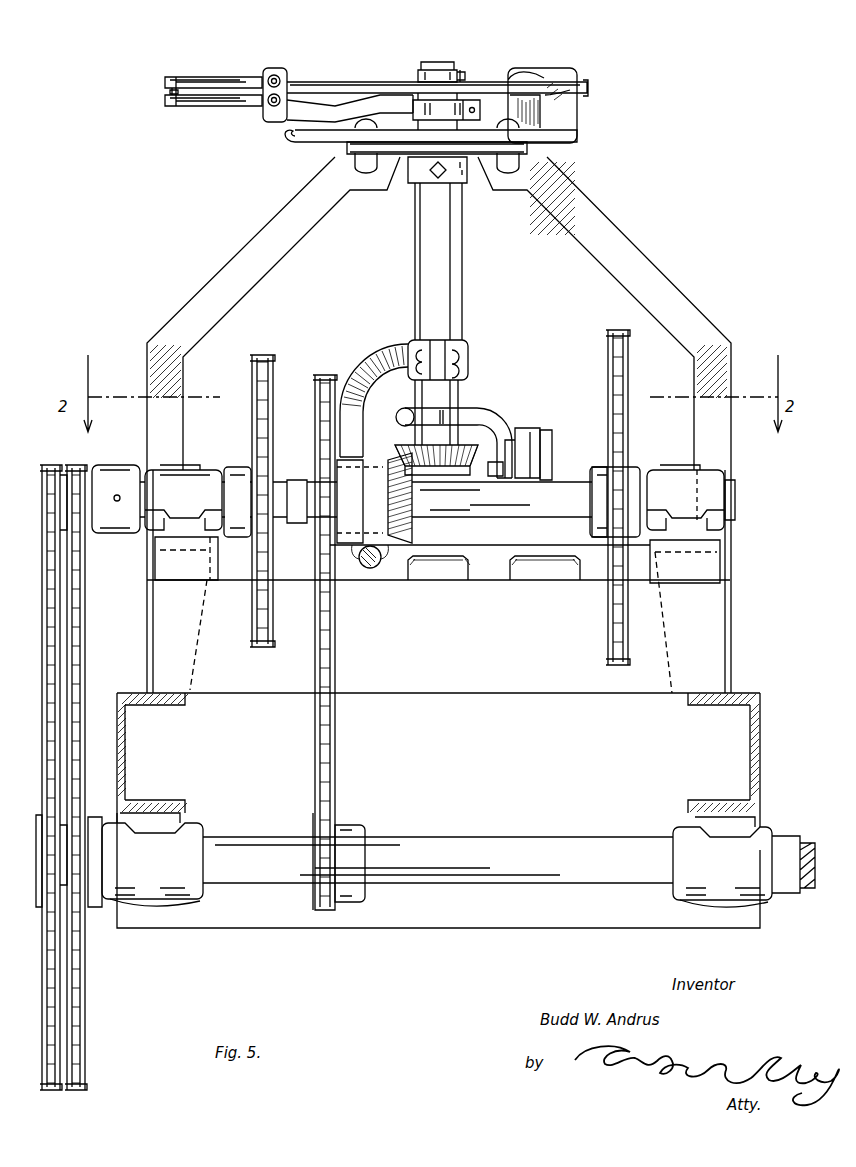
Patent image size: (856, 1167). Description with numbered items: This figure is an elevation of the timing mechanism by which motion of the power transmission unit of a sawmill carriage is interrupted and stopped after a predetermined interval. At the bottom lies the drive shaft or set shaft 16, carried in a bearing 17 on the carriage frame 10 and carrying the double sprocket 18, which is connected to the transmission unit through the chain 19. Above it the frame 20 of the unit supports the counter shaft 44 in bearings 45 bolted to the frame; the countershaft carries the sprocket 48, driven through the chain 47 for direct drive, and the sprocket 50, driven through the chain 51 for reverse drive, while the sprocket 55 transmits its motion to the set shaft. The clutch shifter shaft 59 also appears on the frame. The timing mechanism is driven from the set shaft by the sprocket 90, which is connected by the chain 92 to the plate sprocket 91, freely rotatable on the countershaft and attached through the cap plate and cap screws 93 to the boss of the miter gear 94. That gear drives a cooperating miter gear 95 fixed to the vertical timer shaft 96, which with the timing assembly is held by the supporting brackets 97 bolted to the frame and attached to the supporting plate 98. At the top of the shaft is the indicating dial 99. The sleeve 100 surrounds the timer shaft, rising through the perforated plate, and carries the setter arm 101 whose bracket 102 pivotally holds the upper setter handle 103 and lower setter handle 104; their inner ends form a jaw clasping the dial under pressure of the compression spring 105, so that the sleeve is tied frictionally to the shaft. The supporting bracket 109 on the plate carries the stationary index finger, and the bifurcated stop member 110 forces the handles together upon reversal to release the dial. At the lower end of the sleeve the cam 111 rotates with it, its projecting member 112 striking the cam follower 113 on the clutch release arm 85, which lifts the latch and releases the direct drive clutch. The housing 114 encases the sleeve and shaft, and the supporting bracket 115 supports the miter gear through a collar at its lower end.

The frame 10 is at (784, 805).
The drive shaft 16 is at (599, 837).
The bearing 17 is at (662, 917).
The double sprocket 18 is at (85, 942).
The chain 19 is at (85, 575).
The frame 20 is at (712, 760).
The counter shaft 44 is at (735, 495).
The bearings 45 is at (672, 469).
The chain 47 is at (607, 332).
The sprocket 48 is at (638, 467).
The sprocket 50 is at (236, 467).
The chain 51 is at (266, 355).
The sprocket 55 is at (88, 462).
The clutch shifter shaft 59 is at (378, 568).
The clutch release arm 85 is at (552, 455).
The sprocket 90 is at (368, 825).
The plate sprocket 91 is at (330, 375).
The chain 92 is at (335, 724).
The cap plate and cap screws 93 is at (318, 463).
The miter gear 94 is at (412, 540).
The miter gear 95 is at (475, 470).
The timer shaft 96 is at (452, 62).
The supporting brackets 97 is at (650, 215).
The supporting plate 98 is at (527, 150).
The indicating dial 99 is at (312, 82).
The sleeve 100 is at (472, 100).
The setter arm 101 is at (342, 107).
The bracket 102 is at (272, 68).
The upper setter handle 103 is at (210, 73).
The lower setter handle 104 is at (215, 108).
The compression spring 105 is at (163, 93).
The supporting bracket 109 is at (284, 140).
The bifurcated stop member 110 is at (577, 115).
The cam 111 is at (475, 408).
The projecting member 112 is at (510, 480).
The cam follower 113 is at (525, 427).
The housing 114 is at (460, 258).
The supporting bracket 115 is at (364, 355).